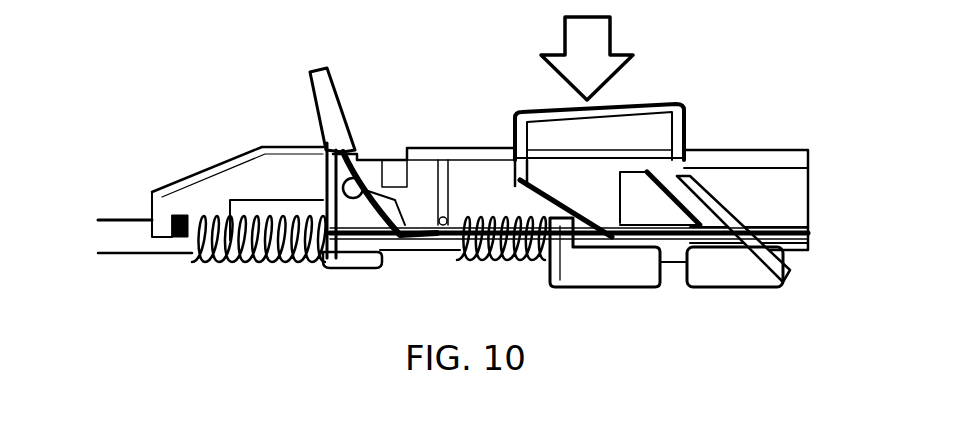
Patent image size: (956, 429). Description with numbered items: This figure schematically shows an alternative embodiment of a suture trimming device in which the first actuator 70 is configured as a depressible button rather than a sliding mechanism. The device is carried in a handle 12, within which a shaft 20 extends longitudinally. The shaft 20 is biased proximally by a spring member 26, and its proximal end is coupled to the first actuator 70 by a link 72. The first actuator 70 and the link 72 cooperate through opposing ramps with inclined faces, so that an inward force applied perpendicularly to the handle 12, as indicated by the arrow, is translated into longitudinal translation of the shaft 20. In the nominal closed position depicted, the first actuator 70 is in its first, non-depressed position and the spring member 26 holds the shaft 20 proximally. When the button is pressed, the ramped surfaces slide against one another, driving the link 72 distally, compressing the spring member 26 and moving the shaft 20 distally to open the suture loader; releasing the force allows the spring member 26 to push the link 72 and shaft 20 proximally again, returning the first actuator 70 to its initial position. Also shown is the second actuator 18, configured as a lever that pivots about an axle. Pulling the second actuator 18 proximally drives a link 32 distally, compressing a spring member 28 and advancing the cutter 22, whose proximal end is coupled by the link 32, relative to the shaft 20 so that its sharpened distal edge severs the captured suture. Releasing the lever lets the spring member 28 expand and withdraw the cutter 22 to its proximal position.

The handle 12 is at (740, 147).
The second actuator 18 is at (337, 93).
The shaft 20 is at (445, 250).
The cutter 22 is at (148, 255).
The spring member 26 is at (503, 260).
The spring member 28 is at (258, 258).
The link 32 is at (345, 266).
The first actuator 70 is at (666, 100).
The link 72 is at (622, 290).